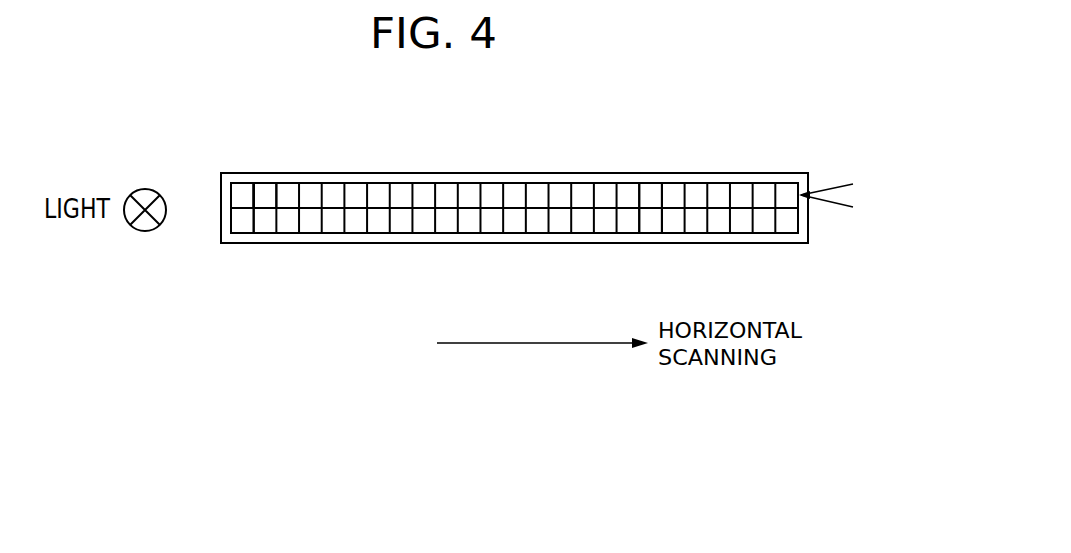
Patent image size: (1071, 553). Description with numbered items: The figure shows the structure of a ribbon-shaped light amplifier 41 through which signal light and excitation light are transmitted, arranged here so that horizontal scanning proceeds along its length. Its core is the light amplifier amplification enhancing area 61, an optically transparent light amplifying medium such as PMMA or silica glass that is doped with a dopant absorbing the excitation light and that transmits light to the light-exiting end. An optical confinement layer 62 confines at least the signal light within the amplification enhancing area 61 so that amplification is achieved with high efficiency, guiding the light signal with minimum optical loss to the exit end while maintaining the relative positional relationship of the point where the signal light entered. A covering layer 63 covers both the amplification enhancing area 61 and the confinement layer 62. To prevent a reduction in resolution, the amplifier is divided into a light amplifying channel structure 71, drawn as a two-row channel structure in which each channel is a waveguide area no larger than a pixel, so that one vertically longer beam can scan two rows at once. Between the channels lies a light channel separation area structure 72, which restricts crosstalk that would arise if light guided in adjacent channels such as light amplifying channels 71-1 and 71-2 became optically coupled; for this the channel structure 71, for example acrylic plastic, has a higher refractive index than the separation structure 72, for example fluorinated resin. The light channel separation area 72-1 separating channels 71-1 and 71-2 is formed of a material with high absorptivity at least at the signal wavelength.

The ribbon-shaped light amplifier 41 is at (335, 358).
The light amplifier amplification enhancing area 61 is at (515, 177).
The optical confinement layer 62 is at (432, 233).
The covering layer 63 is at (242, 173).
The light amplifying channel structure 71 is at (653, 192).
The light amplifying channel 71-1 is at (247, 193).
The light amplifying channel 71-2 is at (268, 192).
The light channel separation area structure 72 is at (640, 215).
The light channel separation area 72-1 is at (256, 189).